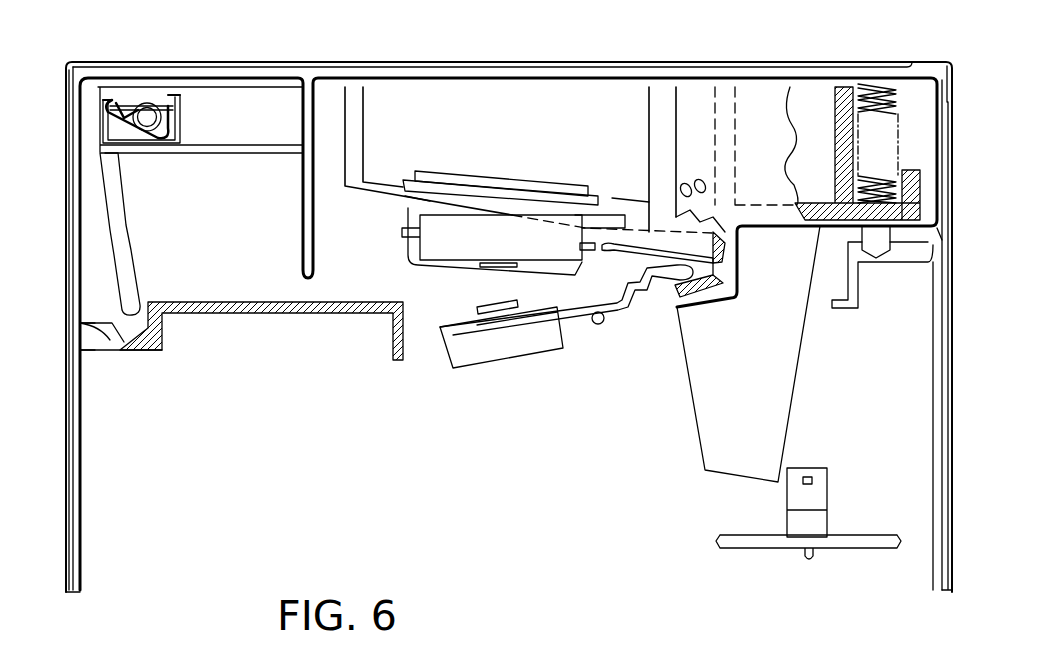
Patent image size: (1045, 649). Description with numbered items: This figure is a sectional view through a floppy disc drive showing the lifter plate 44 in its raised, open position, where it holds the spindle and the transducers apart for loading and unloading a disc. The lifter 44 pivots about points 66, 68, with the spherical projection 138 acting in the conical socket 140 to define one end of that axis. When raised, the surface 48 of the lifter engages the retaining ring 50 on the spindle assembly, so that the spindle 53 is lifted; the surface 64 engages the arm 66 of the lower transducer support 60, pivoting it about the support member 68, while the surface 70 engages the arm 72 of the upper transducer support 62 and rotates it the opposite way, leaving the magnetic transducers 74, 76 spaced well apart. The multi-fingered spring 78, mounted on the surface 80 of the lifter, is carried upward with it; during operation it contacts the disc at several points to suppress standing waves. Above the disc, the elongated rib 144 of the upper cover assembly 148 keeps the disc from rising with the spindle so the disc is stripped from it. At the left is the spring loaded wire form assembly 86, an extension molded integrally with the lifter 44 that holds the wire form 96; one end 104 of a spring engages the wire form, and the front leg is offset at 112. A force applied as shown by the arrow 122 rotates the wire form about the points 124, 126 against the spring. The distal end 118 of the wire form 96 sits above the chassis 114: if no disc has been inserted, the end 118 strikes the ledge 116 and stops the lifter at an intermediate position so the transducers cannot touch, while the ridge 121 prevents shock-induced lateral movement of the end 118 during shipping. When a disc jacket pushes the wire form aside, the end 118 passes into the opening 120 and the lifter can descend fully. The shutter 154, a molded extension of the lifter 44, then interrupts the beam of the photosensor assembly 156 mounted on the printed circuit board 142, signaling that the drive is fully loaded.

The spring loaded wire form assembly 86 is at (126, 48).
The upper cover assembly 148 is at (326, 75).
The elongated rib 144 is at (303, 192).
The rotation point of the wire form 124 is at (180, 98).
The wire form 96 is at (110, 168).
The end of spring 104 is at (158, 108).
The rotation point of the wire form 126 is at (112, 100).
The offset of the front leg 112 is at (130, 264).
The arrow indicating applied force 122 is at (118, 220).
The distal end of the wire form 118 is at (118, 330).
The chassis 114 is at (158, 330).
The ledge 116 is at (156, 352).
The opening 120 is at (92, 345).
The ridge 121 is at (112, 330).
The lifter plate 44 is at (518, 112).
The surface of the lifter 80 is at (704, 216).
The retaining ring 50 is at (413, 175).
The surface of the lifter 48 is at (378, 183).
The spindle 53 is at (412, 204).
The arm of the upper transducer support 72 is at (612, 213).
The surface of the lifter 70 is at (640, 202).
The upper transducer support 62 is at (432, 240).
The magnetic transducer 76 is at (500, 268).
The multi-fingered spring 78 is at (620, 256).
The lower transducer support 60 is at (455, 366).
The magnetic transducer 74 is at (480, 311).
The arm of the lower transducer support 66 is at (655, 292).
The support member 68 is at (592, 326).
The surface of the lifter 64 is at (686, 302).
The shutter 154 is at (722, 466).
The conical socket 140 is at (855, 302).
The spherical projection 138 is at (905, 236).
The photosensor assembly 156 is at (822, 472).
The printed circuit board 142 is at (760, 550).